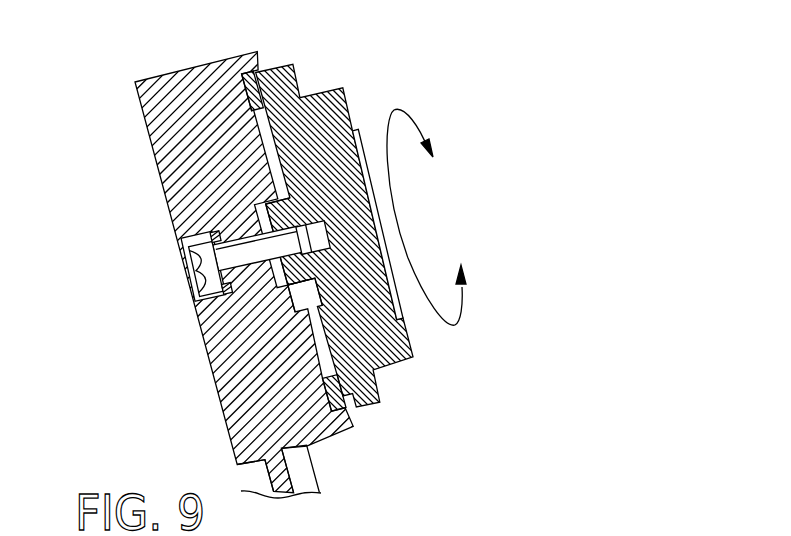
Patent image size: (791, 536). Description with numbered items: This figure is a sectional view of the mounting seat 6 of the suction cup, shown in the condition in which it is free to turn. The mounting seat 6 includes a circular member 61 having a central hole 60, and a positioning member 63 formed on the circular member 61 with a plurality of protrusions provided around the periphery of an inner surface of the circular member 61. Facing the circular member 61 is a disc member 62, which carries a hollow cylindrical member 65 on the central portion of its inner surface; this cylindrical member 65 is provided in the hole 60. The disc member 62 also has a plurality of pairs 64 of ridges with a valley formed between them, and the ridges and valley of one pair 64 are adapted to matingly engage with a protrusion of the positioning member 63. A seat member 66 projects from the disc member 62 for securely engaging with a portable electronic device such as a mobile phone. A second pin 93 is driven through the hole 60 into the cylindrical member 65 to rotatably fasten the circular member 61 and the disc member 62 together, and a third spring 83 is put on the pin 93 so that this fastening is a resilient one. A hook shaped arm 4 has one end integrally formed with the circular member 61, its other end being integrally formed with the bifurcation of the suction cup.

The hook shaped arm 4 is at (308, 483).
The mounting seat 6 is at (325, 268).
The central hole 60 is at (262, 212).
The circular member 61 is at (178, 130).
The disc member 62 is at (293, 74).
The positioning member 63 is at (247, 88).
The pairs of ridges 64 is at (333, 385).
The cylindrical member 65 is at (292, 281).
The seat member 66 is at (346, 100).
The third spring 83 is at (210, 233).
The second pin 93 is at (228, 263).